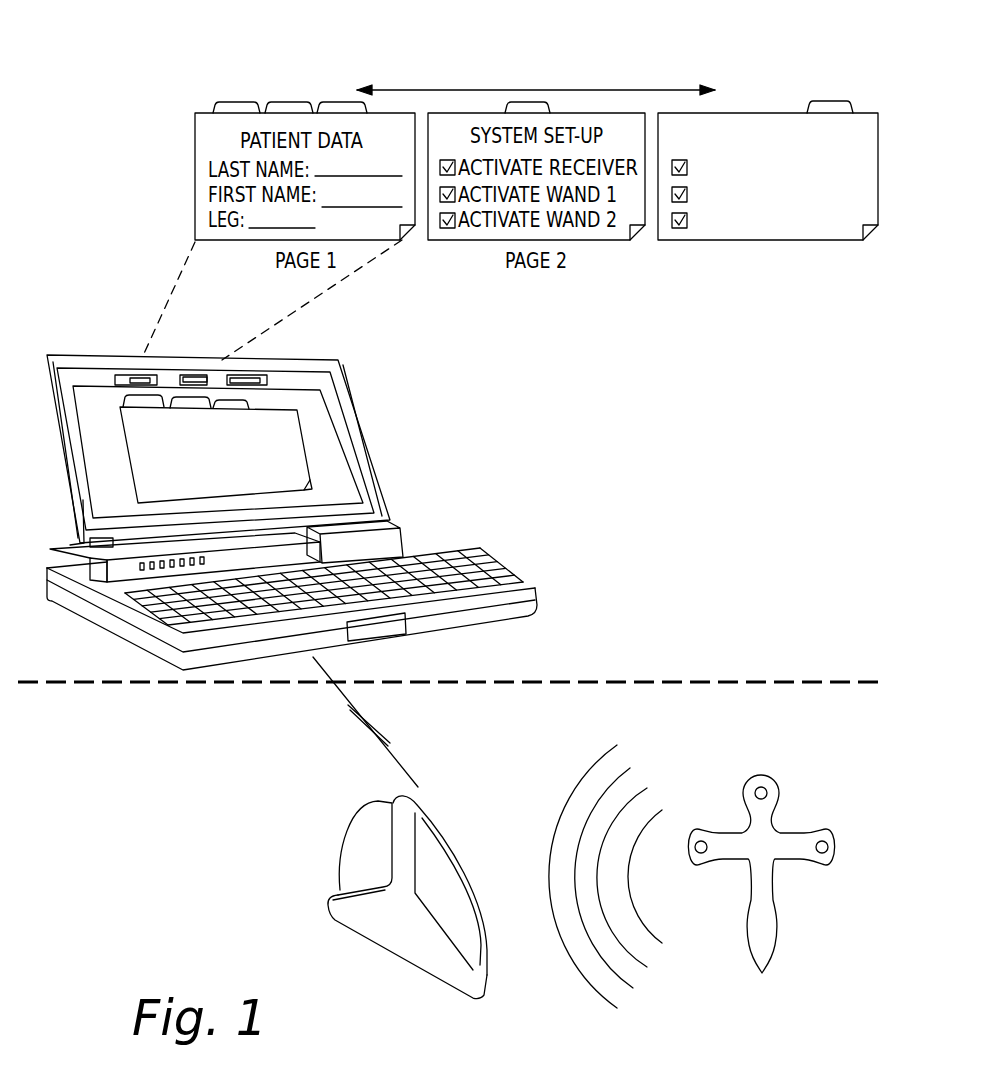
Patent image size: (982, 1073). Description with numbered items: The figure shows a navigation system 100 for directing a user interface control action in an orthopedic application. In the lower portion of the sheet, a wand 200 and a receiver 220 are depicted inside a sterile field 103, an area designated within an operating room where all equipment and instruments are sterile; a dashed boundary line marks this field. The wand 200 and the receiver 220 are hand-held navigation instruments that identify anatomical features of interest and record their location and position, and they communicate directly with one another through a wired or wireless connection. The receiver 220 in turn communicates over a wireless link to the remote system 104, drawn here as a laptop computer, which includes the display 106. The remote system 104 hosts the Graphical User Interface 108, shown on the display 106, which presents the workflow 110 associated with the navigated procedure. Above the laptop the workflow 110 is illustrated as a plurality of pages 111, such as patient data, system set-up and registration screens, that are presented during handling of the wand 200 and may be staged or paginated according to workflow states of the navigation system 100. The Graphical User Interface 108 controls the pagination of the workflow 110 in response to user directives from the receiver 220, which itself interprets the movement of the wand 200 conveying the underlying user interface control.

The navigation system 100 is at (217, 953).
The sterile field 103 is at (705, 680).
The remote system 104 is at (435, 568).
The display 106 is at (355, 437).
The Graphical User Interface 108 is at (147, 422).
The workflow 110 is at (672, 88).
The pages 111 is at (773, 113).
The wand 200 is at (820, 837).
The receiver 220 is at (350, 843).